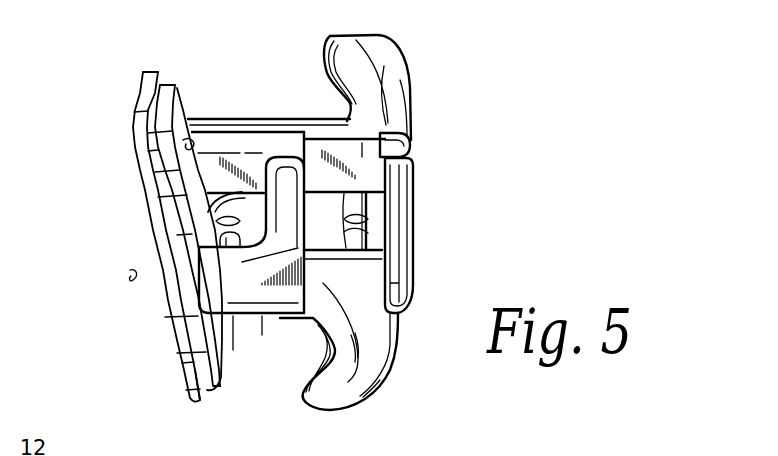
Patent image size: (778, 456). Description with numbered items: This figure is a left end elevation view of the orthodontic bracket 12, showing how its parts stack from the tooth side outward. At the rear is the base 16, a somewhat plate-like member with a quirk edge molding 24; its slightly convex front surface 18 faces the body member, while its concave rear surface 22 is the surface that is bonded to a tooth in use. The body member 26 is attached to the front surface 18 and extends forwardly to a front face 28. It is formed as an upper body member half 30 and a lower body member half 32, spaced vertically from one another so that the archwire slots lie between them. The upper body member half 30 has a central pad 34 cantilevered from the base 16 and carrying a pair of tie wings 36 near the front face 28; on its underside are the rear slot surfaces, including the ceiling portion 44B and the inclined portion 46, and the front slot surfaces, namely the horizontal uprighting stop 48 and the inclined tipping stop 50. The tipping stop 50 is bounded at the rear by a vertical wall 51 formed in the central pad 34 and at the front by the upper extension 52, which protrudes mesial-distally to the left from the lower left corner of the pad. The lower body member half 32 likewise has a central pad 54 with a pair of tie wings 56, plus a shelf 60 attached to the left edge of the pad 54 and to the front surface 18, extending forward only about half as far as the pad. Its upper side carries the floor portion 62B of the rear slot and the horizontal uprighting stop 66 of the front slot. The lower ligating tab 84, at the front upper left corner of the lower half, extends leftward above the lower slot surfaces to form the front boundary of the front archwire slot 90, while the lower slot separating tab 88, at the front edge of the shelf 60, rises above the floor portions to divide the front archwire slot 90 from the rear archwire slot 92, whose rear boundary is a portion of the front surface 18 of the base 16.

The bracket 12 is at (132, 70).
The base 16 is at (133, 113).
The front surface 18 is at (167, 141).
The rear surface 22 is at (162, 268).
The quirk edge molding 24 is at (142, 126).
The body member 26 is at (237, 120).
The front face 28 is at (400, 318).
The upper body member half 30 is at (260, 132).
The lower body member half 32 is at (241, 306).
The central pad 34 is at (205, 140).
The tie wings 36 is at (350, 50).
The ceiling portion 44B is at (228, 205).
The inclined portion 46 is at (262, 165).
The horizontal uprighting stop 48 is at (352, 218).
The inclined tipping stop 50 is at (362, 143).
The vertical wall 51 is at (320, 143).
The upper extension 52 is at (398, 146).
The central pad 54 is at (323, 283).
The tie wings 56 is at (314, 410).
The shelf 60 is at (205, 240).
The floor portion 62B is at (218, 236).
The horizontal uprighting stop 66 is at (344, 232).
The lower ligating tab 84 is at (405, 265).
The lower slot separating tab 88 is at (268, 258).
The front archwire slot 90 is at (344, 219).
The rear archwire slot 92 is at (216, 221).